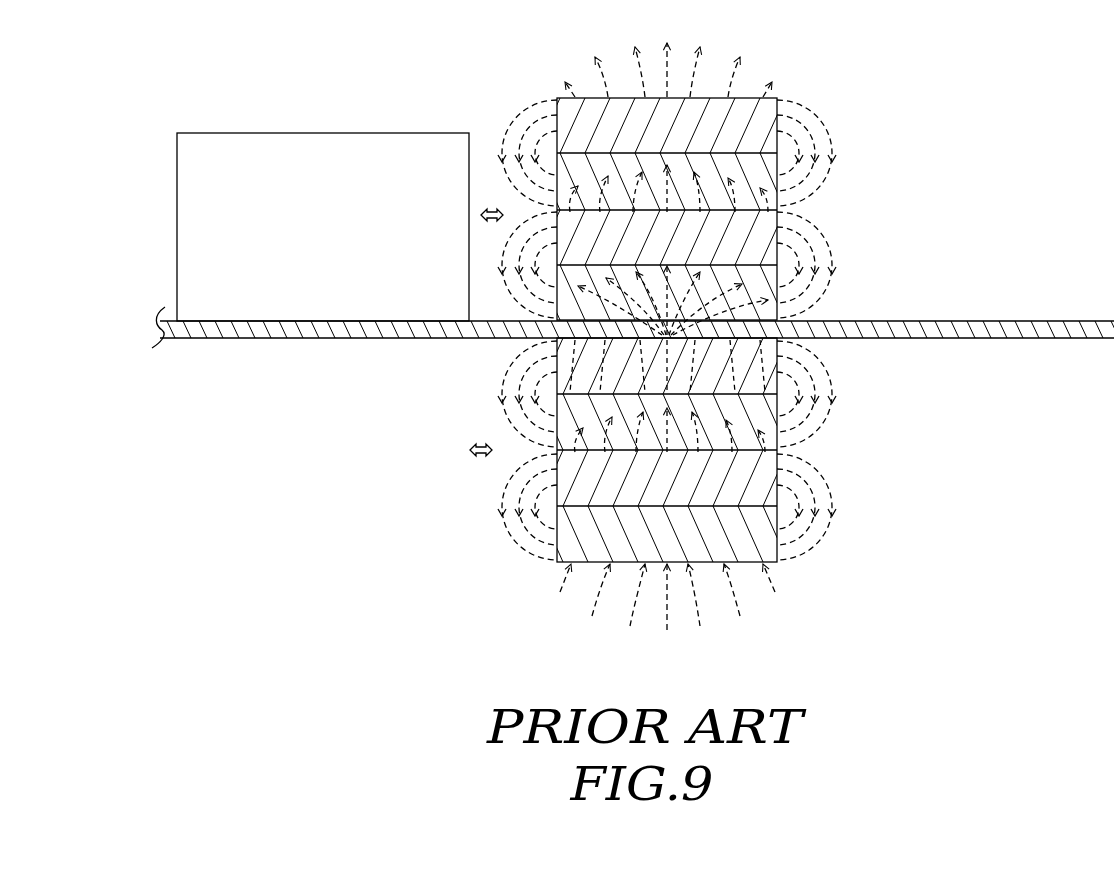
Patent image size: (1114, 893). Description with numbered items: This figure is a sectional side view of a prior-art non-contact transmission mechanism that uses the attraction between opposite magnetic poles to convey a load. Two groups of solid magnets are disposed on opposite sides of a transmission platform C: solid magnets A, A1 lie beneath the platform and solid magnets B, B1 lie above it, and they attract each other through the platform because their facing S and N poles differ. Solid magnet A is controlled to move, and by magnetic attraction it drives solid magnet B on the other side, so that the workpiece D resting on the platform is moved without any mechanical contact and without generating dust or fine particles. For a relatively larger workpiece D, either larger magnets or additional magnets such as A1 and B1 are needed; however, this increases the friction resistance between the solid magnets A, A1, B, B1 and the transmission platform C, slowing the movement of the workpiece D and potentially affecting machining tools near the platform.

The solid magnet A is at (826, 421).
The solid magnet A1 is at (784, 569).
The solid magnet B is at (810, 213).
The solid magnet B1 is at (789, 94).
The transmission platform C is at (988, 332).
The workpiece D is at (303, 148).